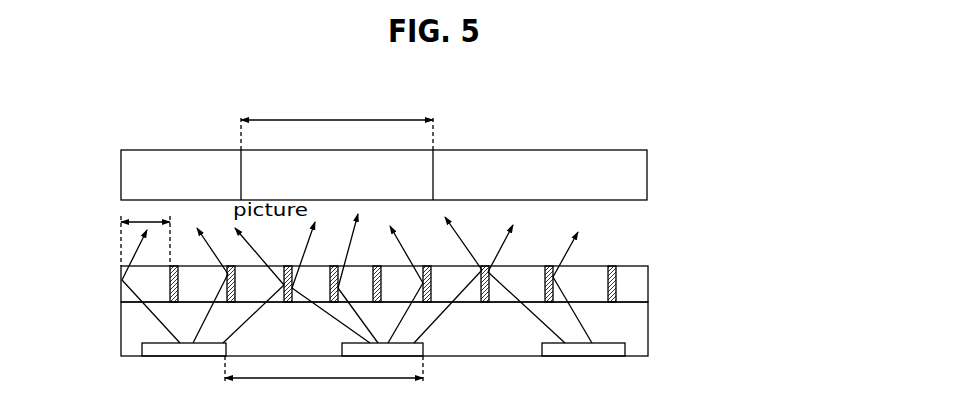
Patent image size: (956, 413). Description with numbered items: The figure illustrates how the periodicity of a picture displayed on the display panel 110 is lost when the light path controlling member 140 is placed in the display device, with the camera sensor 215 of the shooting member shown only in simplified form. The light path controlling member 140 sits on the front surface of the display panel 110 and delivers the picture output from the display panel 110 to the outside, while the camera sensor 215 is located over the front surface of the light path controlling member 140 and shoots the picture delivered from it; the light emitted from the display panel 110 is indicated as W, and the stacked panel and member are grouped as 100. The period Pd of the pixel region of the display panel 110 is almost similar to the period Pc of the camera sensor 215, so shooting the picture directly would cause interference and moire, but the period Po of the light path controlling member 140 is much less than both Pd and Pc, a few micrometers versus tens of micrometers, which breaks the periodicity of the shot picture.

The camera sensor 215 is at (648, 172).
The light path controlling member 140 is at (648, 282).
The display panel 110 is at (648, 330).
The backlight unit 100 is at (467, 311).
The light ray W is at (152, 313).
The period of the camera sensor Pc is at (337, 124).
The period of the light path controlling member Po is at (145, 233).
The period of the pixel region Pd is at (324, 378).